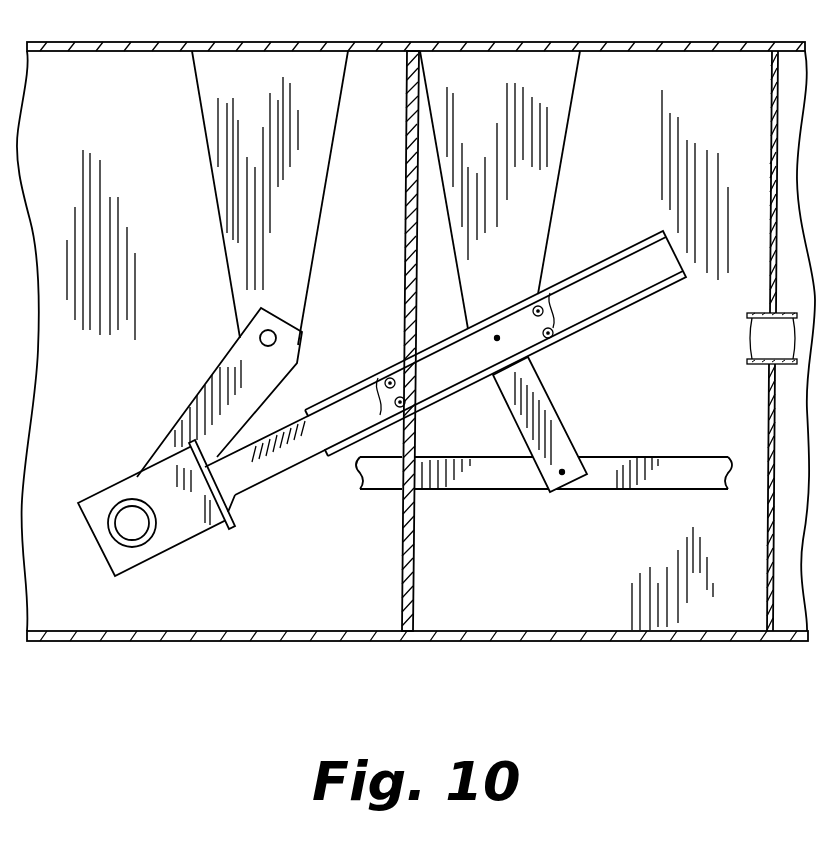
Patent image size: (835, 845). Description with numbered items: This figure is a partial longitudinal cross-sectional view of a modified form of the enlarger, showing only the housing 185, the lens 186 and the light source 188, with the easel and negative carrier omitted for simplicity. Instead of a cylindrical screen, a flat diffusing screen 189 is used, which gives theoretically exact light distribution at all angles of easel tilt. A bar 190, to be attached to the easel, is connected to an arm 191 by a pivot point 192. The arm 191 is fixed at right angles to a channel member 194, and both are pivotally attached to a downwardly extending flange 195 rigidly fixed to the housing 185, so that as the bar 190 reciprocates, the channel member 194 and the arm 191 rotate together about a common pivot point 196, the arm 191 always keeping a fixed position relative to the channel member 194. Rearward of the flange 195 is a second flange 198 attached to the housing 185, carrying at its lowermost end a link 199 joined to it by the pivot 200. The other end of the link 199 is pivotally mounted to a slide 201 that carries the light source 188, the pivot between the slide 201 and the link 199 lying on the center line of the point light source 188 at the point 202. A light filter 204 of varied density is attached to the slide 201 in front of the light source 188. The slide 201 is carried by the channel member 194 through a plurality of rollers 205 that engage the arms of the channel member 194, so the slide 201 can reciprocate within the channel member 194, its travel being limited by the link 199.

The housing 185 is at (355, 42).
The lens 186 is at (750, 330).
The light source 188 is at (133, 530).
The flat diffusing screen 189 is at (413, 575).
The bar 190 is at (638, 480).
The arm 191 is at (552, 427).
The pivot point 192 is at (562, 472).
The channel member 194 is at (632, 305).
The downwardly extending flange 195 is at (556, 192).
The common pivot point 196 is at (497, 338).
The second flange 198 is at (222, 217).
The link 199 is at (185, 417).
The pivot 200 is at (276, 338).
The slide 201 is at (268, 468).
The point of pivot 202 is at (135, 520).
The light filter 204 is at (236, 515).
The rollers 205 is at (550, 338).